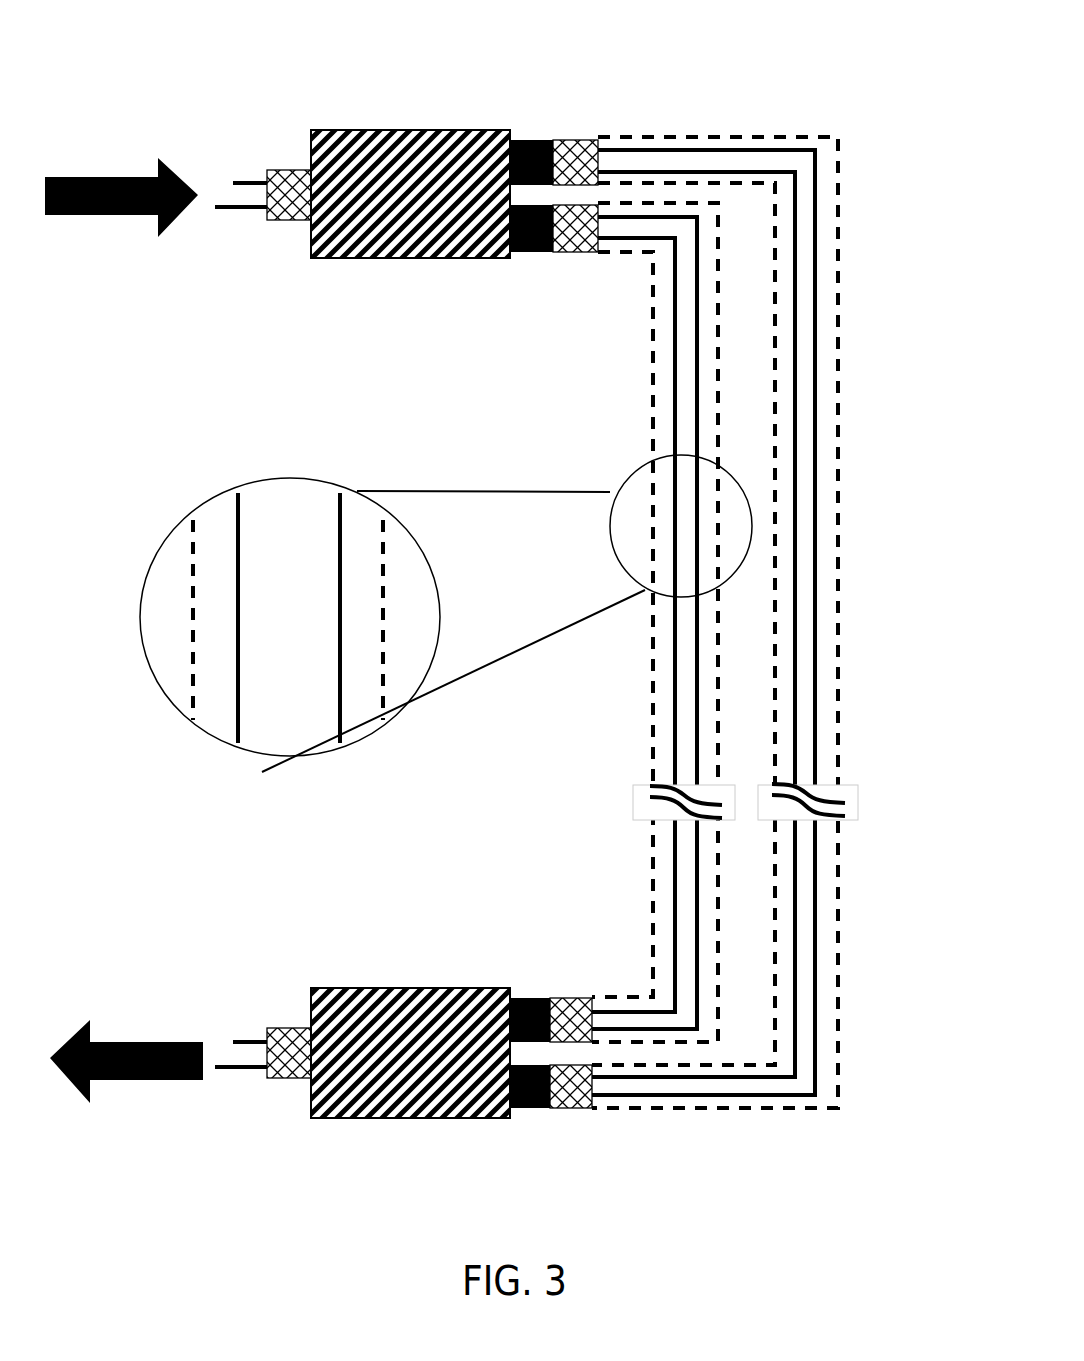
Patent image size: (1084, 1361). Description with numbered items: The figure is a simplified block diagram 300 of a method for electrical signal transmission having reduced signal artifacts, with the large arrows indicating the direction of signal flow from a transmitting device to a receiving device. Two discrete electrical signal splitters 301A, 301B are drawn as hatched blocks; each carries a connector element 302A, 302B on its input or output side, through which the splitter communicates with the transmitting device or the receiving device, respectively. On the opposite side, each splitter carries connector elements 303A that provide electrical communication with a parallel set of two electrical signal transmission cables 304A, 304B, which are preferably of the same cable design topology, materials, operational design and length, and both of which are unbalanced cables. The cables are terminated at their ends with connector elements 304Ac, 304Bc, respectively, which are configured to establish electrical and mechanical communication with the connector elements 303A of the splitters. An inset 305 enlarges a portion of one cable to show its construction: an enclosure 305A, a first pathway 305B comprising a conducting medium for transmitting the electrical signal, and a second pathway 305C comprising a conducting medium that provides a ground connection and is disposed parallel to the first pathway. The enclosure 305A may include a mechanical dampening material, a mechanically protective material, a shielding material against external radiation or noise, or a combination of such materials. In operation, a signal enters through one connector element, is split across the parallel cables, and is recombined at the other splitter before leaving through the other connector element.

The simplified block diagram 300 is at (122, 77).
The electrical signal splitter 301A is at (407, 108).
The electrical signal splitter 301B is at (380, 954).
The connector element 302A is at (288, 220).
The connector element 302B is at (284, 1028).
The connector element 303A is at (530, 140).
The electrical signal transmission cable 304A is at (635, 663).
The electrical signal transmission cable 304B is at (962, 527).
The connector element 304Ac is at (582, 253).
The connector element 304Bc is at (576, 140).
The inset 305 is at (136, 539).
The enclosure 305A is at (192, 637).
The first pathway 305B is at (238, 677).
The second pathway 305C is at (340, 700).